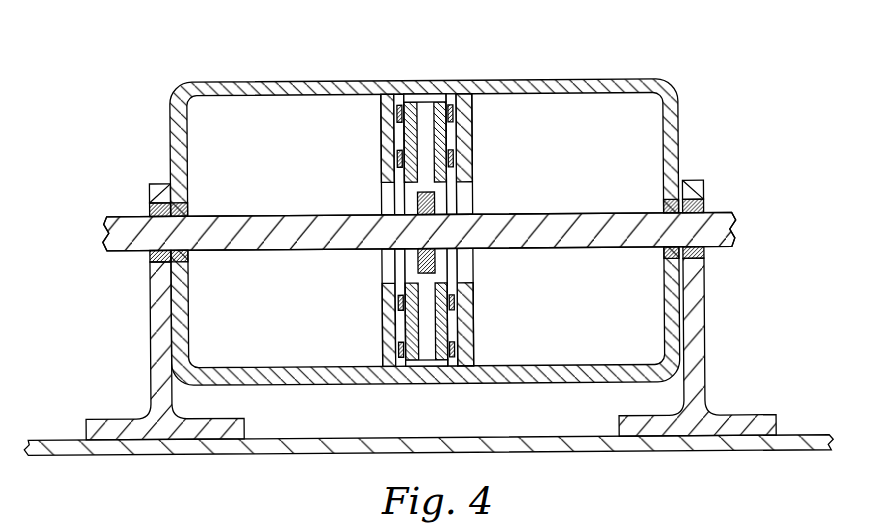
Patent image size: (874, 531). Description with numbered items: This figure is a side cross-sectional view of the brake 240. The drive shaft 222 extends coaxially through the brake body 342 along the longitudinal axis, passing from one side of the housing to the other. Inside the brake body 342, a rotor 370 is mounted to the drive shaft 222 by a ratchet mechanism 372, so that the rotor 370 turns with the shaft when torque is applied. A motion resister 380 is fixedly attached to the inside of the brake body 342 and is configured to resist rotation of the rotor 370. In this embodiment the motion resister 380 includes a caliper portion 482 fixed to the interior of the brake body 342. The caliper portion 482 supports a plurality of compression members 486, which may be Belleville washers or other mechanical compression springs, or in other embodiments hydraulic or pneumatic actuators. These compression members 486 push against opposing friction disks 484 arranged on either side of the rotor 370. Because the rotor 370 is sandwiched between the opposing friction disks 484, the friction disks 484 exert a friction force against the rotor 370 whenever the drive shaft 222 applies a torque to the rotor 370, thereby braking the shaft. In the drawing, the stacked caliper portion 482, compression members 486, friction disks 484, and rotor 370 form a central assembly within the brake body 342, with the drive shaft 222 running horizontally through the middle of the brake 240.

The brake 240 is at (219, 62).
The drive shaft 222 is at (523, 250).
The brake body 342 is at (641, 80).
The motion resister 380 is at (500, 125).
The caliper portion 482 is at (383, 118).
The friction disks 484 is at (411, 102).
The compression members 486 is at (401, 155).
The ratchet mechanism 372 is at (436, 203).
The rotor 370 is at (432, 357).